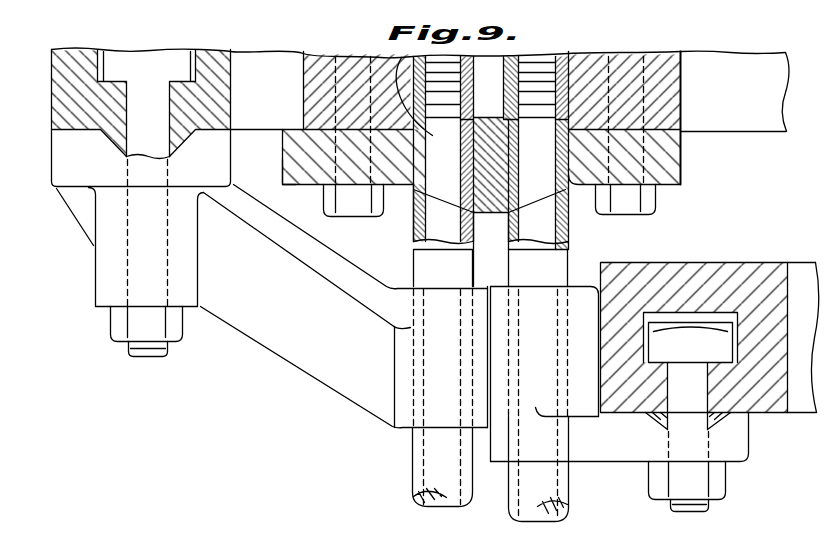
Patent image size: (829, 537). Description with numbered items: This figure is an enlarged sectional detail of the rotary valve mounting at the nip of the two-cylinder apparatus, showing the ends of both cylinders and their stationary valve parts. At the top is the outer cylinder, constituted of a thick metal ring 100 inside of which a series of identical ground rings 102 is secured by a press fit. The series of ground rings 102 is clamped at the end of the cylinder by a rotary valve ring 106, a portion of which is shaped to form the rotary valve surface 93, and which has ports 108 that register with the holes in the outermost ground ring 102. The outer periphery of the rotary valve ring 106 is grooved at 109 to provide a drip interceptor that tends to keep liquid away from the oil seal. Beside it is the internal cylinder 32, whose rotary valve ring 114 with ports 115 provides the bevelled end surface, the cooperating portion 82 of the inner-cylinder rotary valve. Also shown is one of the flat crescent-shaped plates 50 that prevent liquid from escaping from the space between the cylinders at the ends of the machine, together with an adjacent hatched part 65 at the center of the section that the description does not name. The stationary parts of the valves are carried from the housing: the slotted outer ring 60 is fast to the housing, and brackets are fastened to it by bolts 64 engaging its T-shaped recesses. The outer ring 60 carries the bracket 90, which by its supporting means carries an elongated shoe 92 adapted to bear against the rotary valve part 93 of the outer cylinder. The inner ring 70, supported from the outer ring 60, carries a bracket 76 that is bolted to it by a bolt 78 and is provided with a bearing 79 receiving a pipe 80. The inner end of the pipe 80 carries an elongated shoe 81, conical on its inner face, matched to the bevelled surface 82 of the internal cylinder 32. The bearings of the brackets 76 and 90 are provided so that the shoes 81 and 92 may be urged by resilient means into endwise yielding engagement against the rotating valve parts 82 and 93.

The internal cylinder 32 is at (668, 97).
The crescent-shaped plate 50 is at (492, 212).
The outer ring 60 is at (58, 100).
The bolt 64 is at (152, 360).
The pin head 65 is at (478, 124).
The inner ring 70 is at (730, 280).
The bracket 76 is at (632, 447).
The bolt 78 is at (705, 513).
The bearing 79 is at (577, 298).
The pipe 80 is at (567, 505).
The elongated shoe 81 is at (568, 222).
The cooperating portion of the rotary valve 82 is at (533, 200).
The bracket 90 is at (295, 348).
The elongated shoe 92 is at (416, 216).
The rotary valve part 93 is at (430, 203).
The thick metal ring 100 is at (385, 75).
The ground ring 102 is at (486, 85).
The rotary valve ring 106 is at (306, 185).
The port 108 is at (414, 62).
The groove 109 is at (282, 168).
The rotary valve ring 114 is at (668, 172).
The port 115 is at (546, 58).